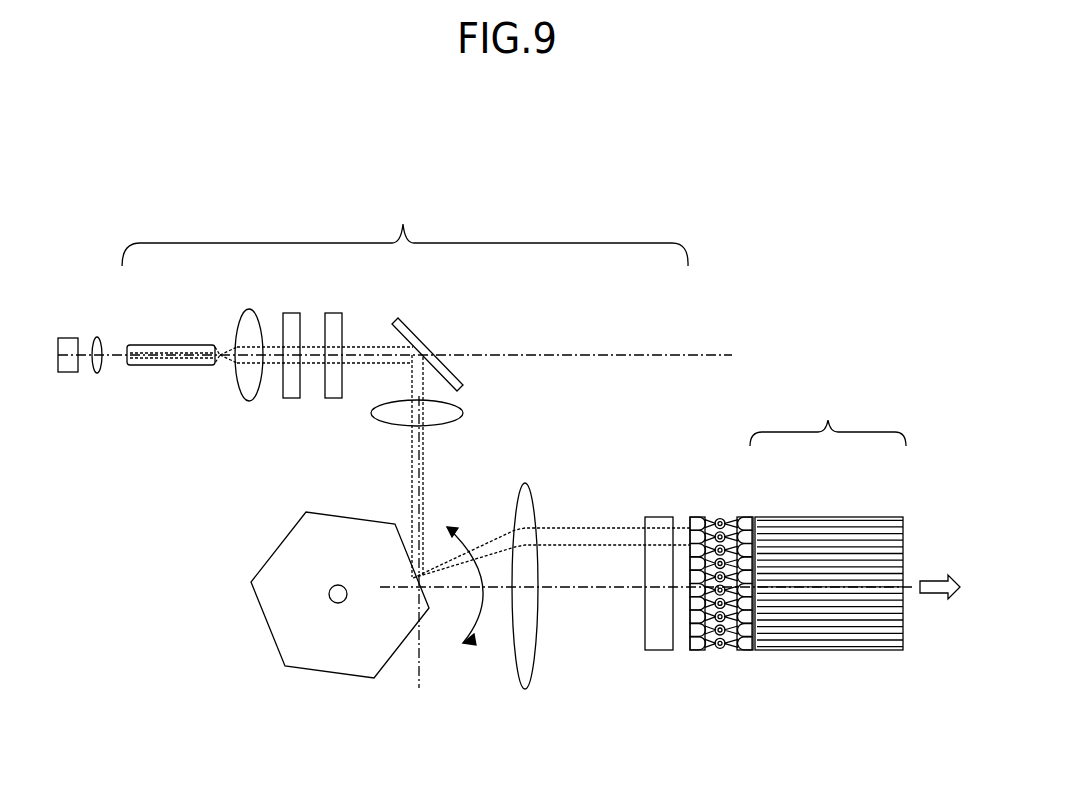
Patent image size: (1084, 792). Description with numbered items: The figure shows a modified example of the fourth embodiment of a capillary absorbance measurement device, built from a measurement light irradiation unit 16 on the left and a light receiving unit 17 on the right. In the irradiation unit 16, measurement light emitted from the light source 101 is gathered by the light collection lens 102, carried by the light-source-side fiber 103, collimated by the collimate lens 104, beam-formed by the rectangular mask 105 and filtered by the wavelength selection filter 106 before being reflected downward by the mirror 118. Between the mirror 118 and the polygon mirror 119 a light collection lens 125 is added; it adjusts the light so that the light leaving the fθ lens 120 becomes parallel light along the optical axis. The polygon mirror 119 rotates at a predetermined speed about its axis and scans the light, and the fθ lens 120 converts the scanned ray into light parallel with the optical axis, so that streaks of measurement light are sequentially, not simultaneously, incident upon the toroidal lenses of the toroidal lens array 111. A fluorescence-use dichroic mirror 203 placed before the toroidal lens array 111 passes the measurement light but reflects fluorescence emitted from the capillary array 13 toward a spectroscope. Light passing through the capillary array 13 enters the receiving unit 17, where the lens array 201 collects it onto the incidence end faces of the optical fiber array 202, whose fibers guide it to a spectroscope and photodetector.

The measurement light irradiation unit 16 is at (405, 228).
The light receiving unit 17 is at (828, 418).
The light source 101 is at (68, 373).
The light collection lens 102 is at (97, 373).
The light-source-side fiber 103 is at (170, 365).
The collimate lens 104 is at (243, 308).
The rectangular mask 105 is at (286, 312).
The wavelength selection filter 106 is at (332, 312).
The mirror 118 is at (393, 320).
The light collection lens 125 is at (372, 413).
The polygon mirror 119 is at (315, 668).
The fθ lens 120 is at (524, 483).
The fluorescence-use dichroic mirror 203 is at (660, 652).
The toroidal lens array 111 is at (695, 517).
The capillary array 13 is at (722, 652).
The lens array 201 is at (740, 517).
The optical fiber array 202 is at (845, 517).